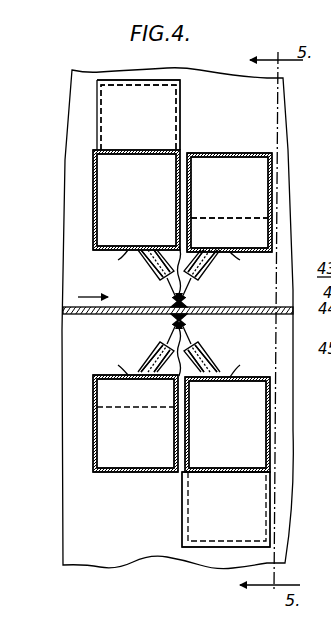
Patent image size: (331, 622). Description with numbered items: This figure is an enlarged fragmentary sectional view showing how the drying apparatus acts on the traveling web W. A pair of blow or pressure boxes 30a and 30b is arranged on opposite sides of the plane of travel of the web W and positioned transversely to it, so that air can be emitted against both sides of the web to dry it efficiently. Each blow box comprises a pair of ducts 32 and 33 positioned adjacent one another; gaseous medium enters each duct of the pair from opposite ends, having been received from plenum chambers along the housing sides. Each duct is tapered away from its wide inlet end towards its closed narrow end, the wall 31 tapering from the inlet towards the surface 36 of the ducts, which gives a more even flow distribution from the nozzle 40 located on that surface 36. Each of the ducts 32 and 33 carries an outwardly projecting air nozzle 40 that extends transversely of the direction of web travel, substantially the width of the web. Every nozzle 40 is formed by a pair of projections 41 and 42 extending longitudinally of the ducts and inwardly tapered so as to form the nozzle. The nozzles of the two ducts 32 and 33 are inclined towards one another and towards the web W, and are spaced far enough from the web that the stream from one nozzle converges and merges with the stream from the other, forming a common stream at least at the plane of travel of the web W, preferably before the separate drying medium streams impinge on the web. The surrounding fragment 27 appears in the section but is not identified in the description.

The fragment of lower housing plate 27 is at (77, 114).
The blow box 30a is at (180, 492).
The blow box 30b is at (238, 127).
The wall 31 is at (169, 122).
The duct 32 is at (271, 239).
The duct 33 is at (95, 197).
The surface of the ducts 36 is at (120, 251).
The air nozzle 40 is at (160, 280).
The projection 41 is at (150, 258).
The projection 42 is at (181, 237).
The web W is at (246, 307).